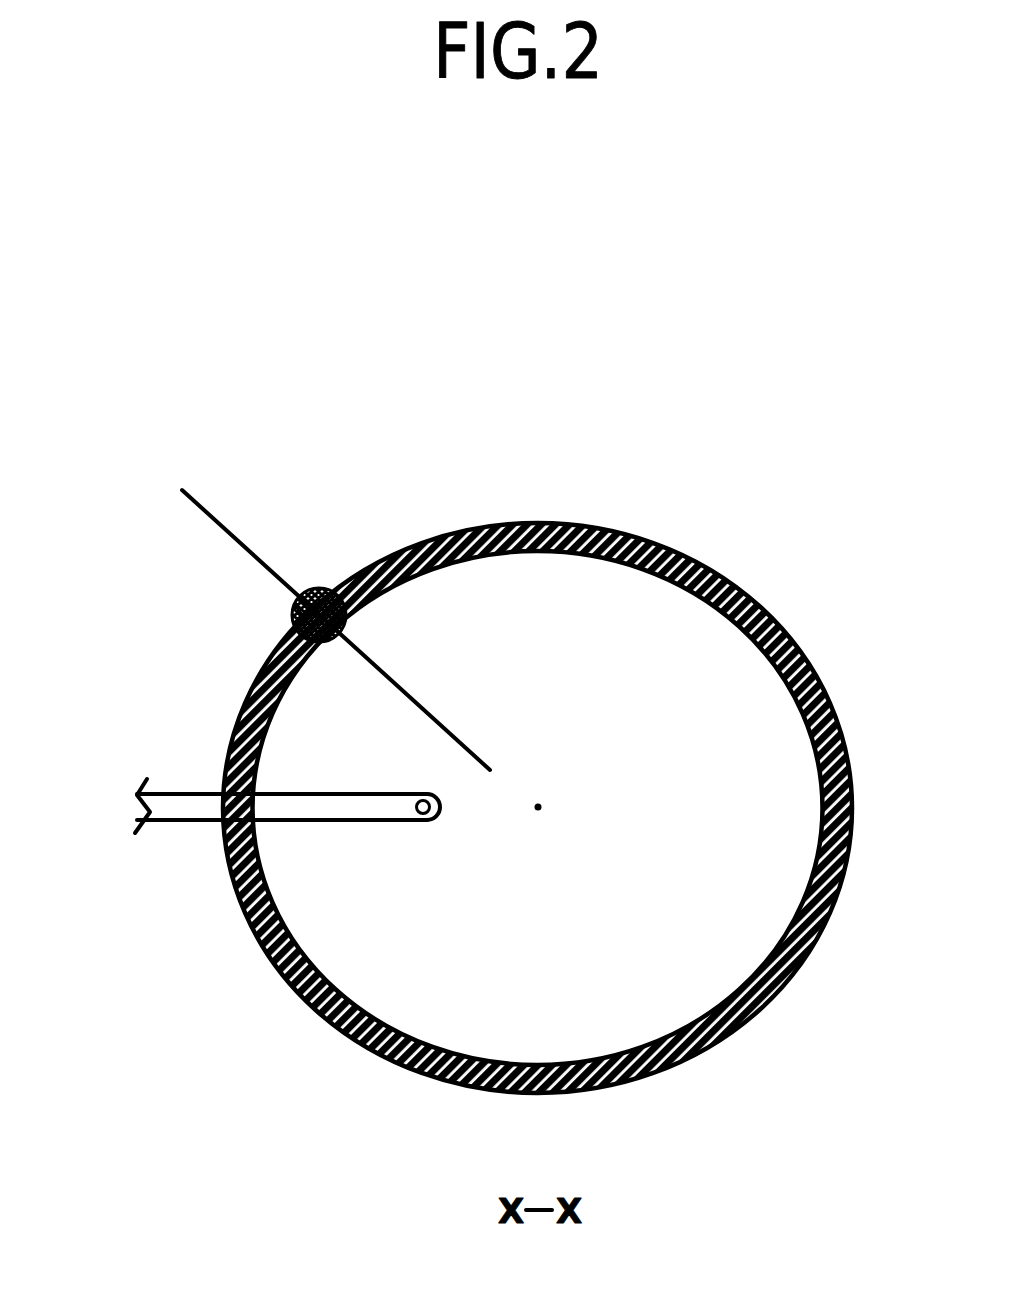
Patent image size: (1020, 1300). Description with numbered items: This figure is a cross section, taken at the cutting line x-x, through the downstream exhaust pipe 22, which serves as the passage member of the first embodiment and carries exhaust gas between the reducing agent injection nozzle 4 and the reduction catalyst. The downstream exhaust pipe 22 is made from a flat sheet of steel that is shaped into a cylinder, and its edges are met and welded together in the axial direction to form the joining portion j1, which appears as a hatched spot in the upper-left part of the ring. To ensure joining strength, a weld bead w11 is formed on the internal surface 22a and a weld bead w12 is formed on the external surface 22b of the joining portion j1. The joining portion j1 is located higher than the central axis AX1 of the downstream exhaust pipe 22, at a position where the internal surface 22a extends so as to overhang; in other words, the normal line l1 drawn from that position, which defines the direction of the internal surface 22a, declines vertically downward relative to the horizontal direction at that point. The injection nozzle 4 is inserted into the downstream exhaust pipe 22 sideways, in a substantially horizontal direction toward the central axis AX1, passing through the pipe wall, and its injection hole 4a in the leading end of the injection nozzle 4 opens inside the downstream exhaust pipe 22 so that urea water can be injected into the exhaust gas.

The injection nozzle 4 is at (318, 820).
The injection hole 4a is at (428, 820).
The downstream exhaust pipe 22 is at (727, 1043).
The internal surface 22a is at (488, 550).
The external surface 22b is at (248, 690).
The joining portion j1 is at (307, 592).
The weld bead w11 is at (347, 628).
The weld bead w12 is at (295, 610).
The normal line l1 is at (442, 720).
The central axis AX1 is at (538, 807).